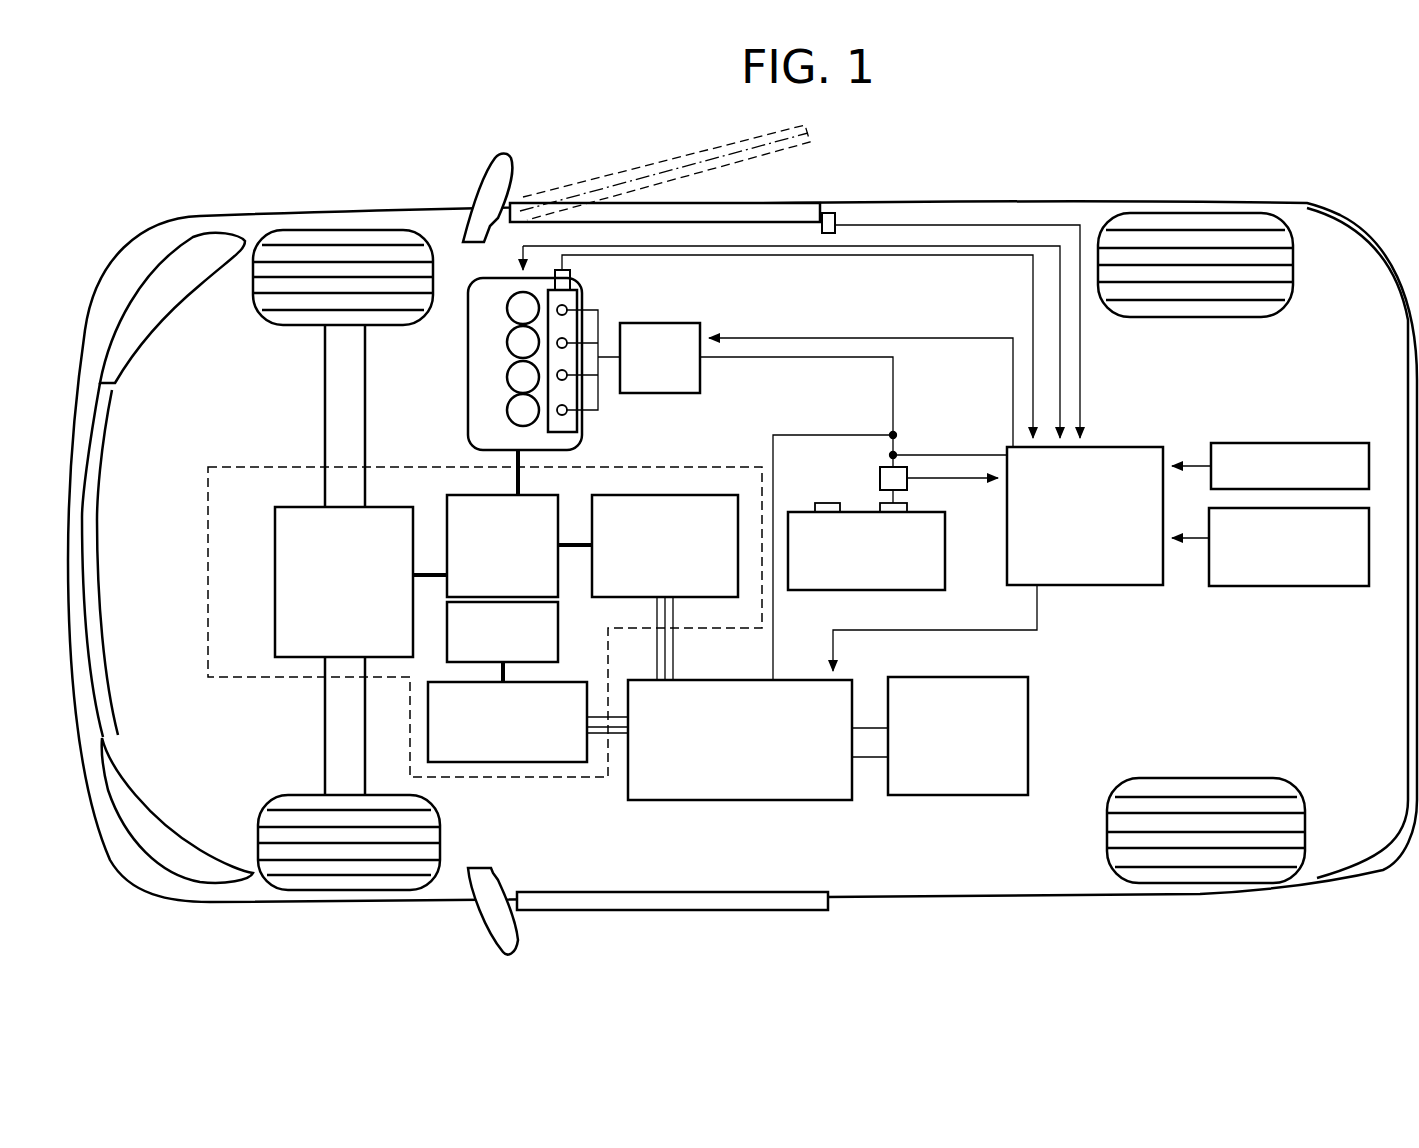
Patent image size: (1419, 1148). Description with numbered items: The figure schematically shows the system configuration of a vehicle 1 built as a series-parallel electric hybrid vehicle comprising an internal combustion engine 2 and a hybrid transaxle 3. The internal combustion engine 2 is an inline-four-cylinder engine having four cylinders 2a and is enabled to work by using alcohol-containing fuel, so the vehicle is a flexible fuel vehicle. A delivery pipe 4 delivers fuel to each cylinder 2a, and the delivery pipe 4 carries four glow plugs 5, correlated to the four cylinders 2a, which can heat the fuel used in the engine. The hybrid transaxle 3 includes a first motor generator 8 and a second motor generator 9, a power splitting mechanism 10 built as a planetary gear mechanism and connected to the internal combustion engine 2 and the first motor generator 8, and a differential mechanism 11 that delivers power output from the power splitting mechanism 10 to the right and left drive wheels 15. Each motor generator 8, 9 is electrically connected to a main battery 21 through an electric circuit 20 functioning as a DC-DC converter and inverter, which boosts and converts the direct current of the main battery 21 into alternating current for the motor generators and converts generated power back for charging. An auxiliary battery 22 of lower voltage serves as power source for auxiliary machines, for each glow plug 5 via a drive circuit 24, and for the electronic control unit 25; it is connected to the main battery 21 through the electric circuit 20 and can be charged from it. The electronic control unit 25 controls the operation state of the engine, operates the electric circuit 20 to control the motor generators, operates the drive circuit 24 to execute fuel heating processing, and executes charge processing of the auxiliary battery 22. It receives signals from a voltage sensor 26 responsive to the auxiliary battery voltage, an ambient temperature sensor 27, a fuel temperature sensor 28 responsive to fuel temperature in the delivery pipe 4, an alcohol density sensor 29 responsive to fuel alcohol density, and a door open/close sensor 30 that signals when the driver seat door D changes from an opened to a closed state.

The vehicle 1 is at (690, 117).
The internal combustion engine 2 is at (483, 293).
The cylinder 2a is at (487, 347).
The hybrid transaxle 3 is at (263, 463).
The delivery pipe 4 is at (573, 305).
The glow plug 5 is at (567, 413).
The first motor generator 8 is at (678, 495).
The second motor generator 9 is at (512, 755).
The power splitting mechanism 10 is at (453, 502).
The differential mechanism 11 is at (315, 515).
The drive wheel 15 is at (337, 237).
The electric circuit 20 is at (728, 695).
The main battery 21 is at (1018, 698).
The auxiliary battery 22 is at (945, 540).
The drive circuit 24 is at (690, 330).
The electronic control unit 25 is at (1113, 452).
The voltage sensor 26 is at (880, 475).
The ambient temperature sensor 27 is at (1287, 443).
The fuel temperature sensor 28 is at (570, 277).
The alcohol density sensor 29 is at (1293, 587).
The door open/close sensor 30 is at (828, 213).
The door D is at (633, 207).